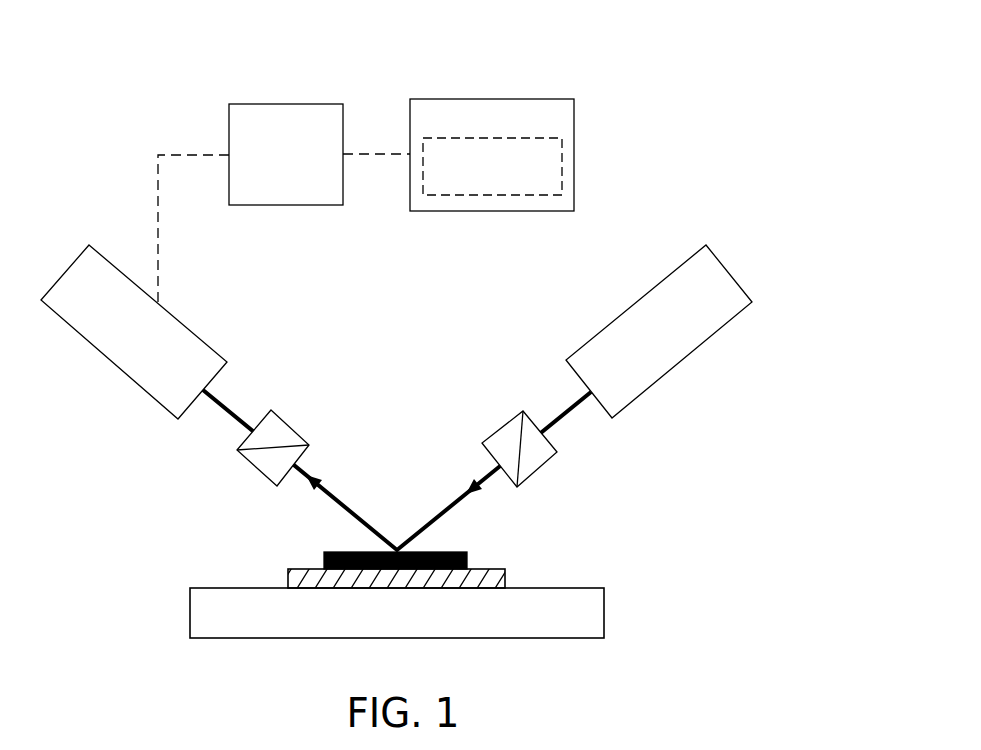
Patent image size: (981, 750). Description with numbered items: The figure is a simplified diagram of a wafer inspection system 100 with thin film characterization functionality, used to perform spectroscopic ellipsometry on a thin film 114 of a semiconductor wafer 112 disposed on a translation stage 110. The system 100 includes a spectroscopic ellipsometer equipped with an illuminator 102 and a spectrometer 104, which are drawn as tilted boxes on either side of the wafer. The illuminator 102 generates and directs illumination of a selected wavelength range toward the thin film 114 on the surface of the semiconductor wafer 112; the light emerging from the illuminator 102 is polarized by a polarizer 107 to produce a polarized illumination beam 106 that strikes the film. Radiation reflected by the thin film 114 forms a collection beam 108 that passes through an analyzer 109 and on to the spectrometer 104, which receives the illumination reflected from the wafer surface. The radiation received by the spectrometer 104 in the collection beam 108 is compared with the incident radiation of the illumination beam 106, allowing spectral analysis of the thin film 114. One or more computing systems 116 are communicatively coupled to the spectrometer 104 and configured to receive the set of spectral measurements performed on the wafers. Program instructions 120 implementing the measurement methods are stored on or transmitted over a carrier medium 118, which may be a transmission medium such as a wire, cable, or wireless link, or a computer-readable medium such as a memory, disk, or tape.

The wafer inspection system 100 is at (108, 69).
The illuminator 102 is at (632, 305).
The spectrometer 104 is at (197, 337).
The illumination beam 106 is at (568, 412).
The polarizer 107 is at (500, 429).
The collection beam 108 is at (347, 507).
The analyzer 109 is at (255, 467).
The translation stage 110 is at (604, 613).
The semiconductor wafer 112 is at (505, 579).
The thin film 114 is at (467, 560).
The computing system 116 is at (229, 117).
The carrier medium 118 is at (574, 114).
The program instructions 120 is at (562, 152).